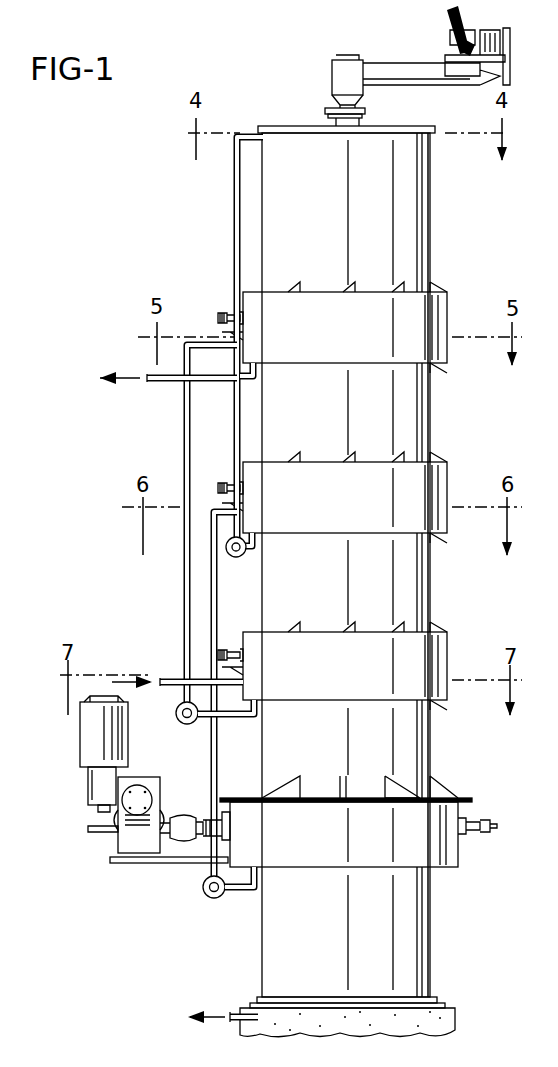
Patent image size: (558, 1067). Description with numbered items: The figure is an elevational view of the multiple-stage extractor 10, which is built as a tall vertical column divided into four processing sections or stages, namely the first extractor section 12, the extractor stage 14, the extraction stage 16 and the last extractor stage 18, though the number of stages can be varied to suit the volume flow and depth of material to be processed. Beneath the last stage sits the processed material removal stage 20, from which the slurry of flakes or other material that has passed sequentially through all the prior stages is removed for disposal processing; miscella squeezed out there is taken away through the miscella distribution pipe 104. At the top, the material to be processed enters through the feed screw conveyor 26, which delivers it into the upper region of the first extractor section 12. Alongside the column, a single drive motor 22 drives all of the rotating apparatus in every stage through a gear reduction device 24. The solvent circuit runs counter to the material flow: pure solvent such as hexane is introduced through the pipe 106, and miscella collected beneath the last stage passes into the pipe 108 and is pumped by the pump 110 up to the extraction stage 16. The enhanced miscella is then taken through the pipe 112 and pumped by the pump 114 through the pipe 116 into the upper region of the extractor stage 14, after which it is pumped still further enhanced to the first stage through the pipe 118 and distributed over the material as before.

The multiple-stage extractor 10 is at (269, 521).
The first extractor section 12 is at (432, 266).
The extractor stage 14 is at (432, 411).
The extraction stage 16 is at (432, 578).
The last extractor stage 18 is at (432, 748).
The processed material removal stage 20 is at (432, 926).
The drive motor 22 is at (80, 740).
The gear reduction device 24 is at (126, 840).
The feed screw conveyor 26 is at (372, 62).
The miscella distribution pipe 104 is at (232, 1012).
The pipe 106 is at (174, 676).
The pipe 108 is at (246, 896).
The pump 110 is at (203, 893).
The pipe 112 is at (242, 722).
The pump 114 is at (183, 726).
The pipe 116 is at (183, 417).
The pipe 118 is at (233, 210).